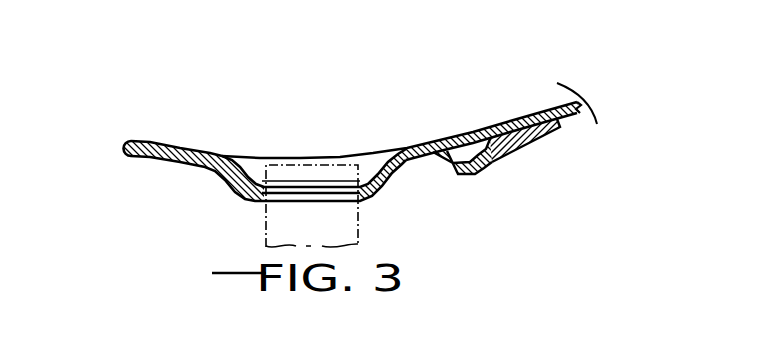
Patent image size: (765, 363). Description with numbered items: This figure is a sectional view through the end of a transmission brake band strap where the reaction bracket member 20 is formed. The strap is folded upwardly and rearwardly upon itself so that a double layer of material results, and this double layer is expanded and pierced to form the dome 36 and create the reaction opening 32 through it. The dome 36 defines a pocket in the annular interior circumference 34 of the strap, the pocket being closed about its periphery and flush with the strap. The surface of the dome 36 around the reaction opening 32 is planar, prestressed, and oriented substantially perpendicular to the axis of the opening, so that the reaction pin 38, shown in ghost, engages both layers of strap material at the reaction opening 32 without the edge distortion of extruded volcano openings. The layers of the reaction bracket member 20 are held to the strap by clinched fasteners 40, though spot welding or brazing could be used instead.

The reaction bracket member 20 is at (170, 148).
The reaction opening 32 is at (303, 183).
The interior circumference 34 is at (508, 120).
The dome 36 is at (226, 186).
The reaction pin 38 is at (358, 227).
The clinched fasteners 40 is at (481, 166).